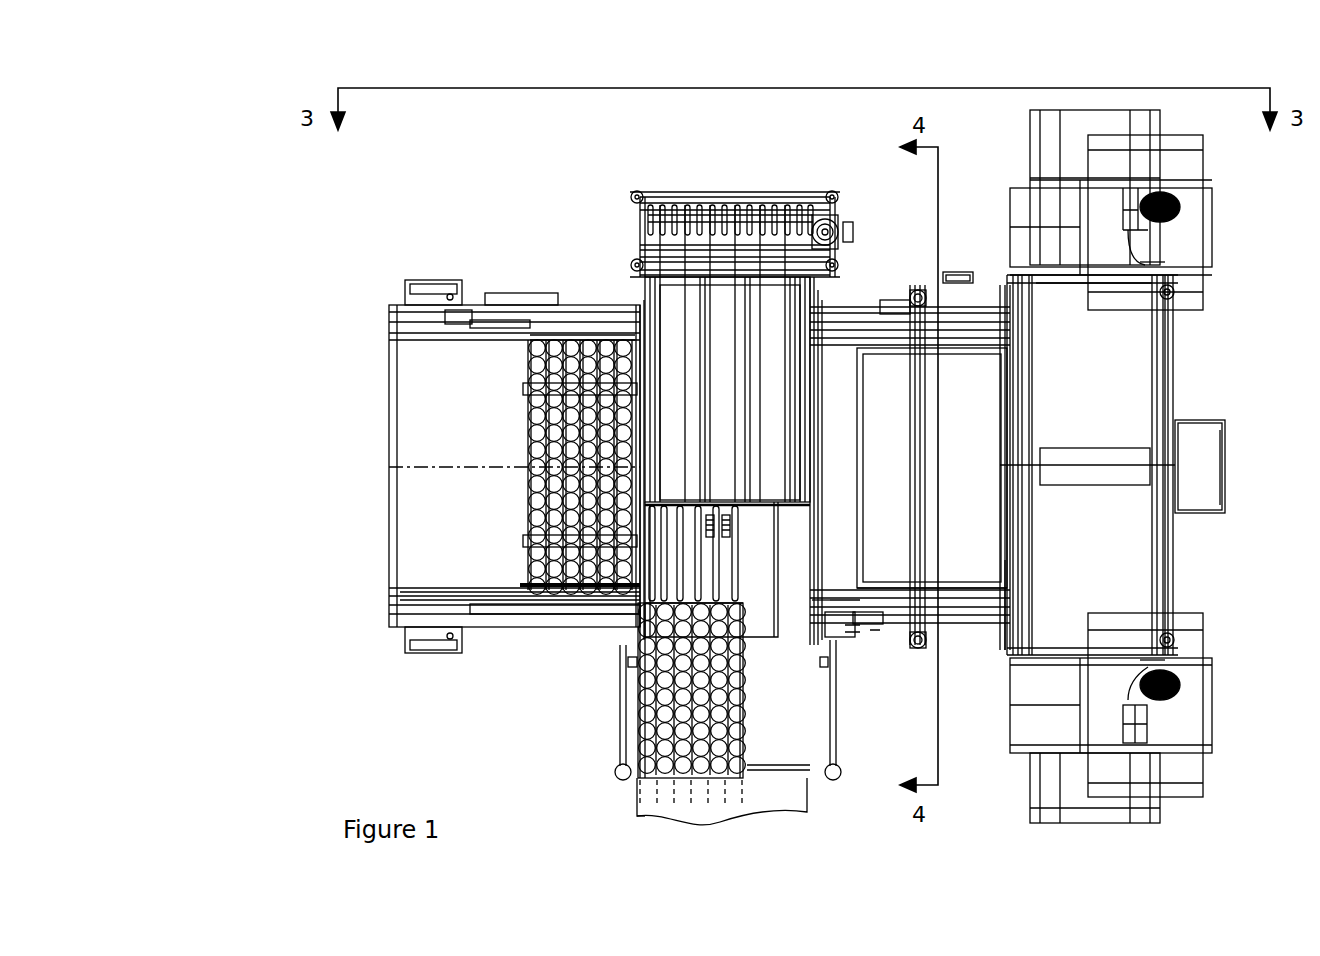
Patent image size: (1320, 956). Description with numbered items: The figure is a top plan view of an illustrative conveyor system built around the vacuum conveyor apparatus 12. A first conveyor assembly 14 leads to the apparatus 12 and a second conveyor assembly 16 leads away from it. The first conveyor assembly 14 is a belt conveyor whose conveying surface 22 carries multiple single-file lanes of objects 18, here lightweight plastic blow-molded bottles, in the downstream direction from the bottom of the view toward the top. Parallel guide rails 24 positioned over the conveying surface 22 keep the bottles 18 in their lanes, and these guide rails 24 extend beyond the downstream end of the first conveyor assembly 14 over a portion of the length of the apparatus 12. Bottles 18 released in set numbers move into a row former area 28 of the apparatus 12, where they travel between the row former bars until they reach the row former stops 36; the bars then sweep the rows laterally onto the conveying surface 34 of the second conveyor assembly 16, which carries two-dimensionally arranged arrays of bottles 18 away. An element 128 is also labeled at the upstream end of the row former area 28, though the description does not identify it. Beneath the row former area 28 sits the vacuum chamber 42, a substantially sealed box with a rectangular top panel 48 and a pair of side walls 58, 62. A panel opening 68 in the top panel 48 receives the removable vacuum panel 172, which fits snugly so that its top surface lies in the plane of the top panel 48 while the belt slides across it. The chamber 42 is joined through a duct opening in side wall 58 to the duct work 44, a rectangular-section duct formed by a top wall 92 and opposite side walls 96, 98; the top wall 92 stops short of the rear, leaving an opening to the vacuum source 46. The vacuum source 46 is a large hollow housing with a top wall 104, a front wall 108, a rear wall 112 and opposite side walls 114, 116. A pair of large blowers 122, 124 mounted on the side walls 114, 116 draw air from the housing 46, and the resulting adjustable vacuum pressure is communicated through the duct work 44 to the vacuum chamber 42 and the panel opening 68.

The vacuum conveyor apparatus 12 is at (628, 693).
The first conveyor assembly 14 is at (625, 814).
The second conveyor assembly 16 is at (553, 605).
The objects 18 is at (648, 775).
The conveying surface 22 is at (795, 797).
The guide rails 24 is at (632, 657).
The row former area 28 is at (820, 292).
The conveying surface 34 is at (478, 372).
The row former stops 36 is at (583, 338).
The vacuum chamber 42 is at (851, 640).
The duct work 44 is at (822, 603).
The vacuum source 46 is at (1195, 555).
The top panel 48 is at (800, 563).
The side wall 58 is at (973, 587).
The side wall 62 is at (632, 575).
The panel opening 68 is at (793, 522).
The top wall 92 is at (950, 363).
The side wall 96 is at (1002, 600).
The side wall 98 is at (925, 300).
The top wall 104 is at (1118, 355).
The front wall 108 is at (912, 650).
The rear wall 112 is at (1180, 400).
The side wall 114 is at (1187, 662).
The side wall 116 is at (1140, 270).
The blower 122 is at (1218, 735).
The blower 124 is at (1218, 225).
The gripper bar 128 is at (730, 212).
The vacuum panel 172 is at (757, 525).